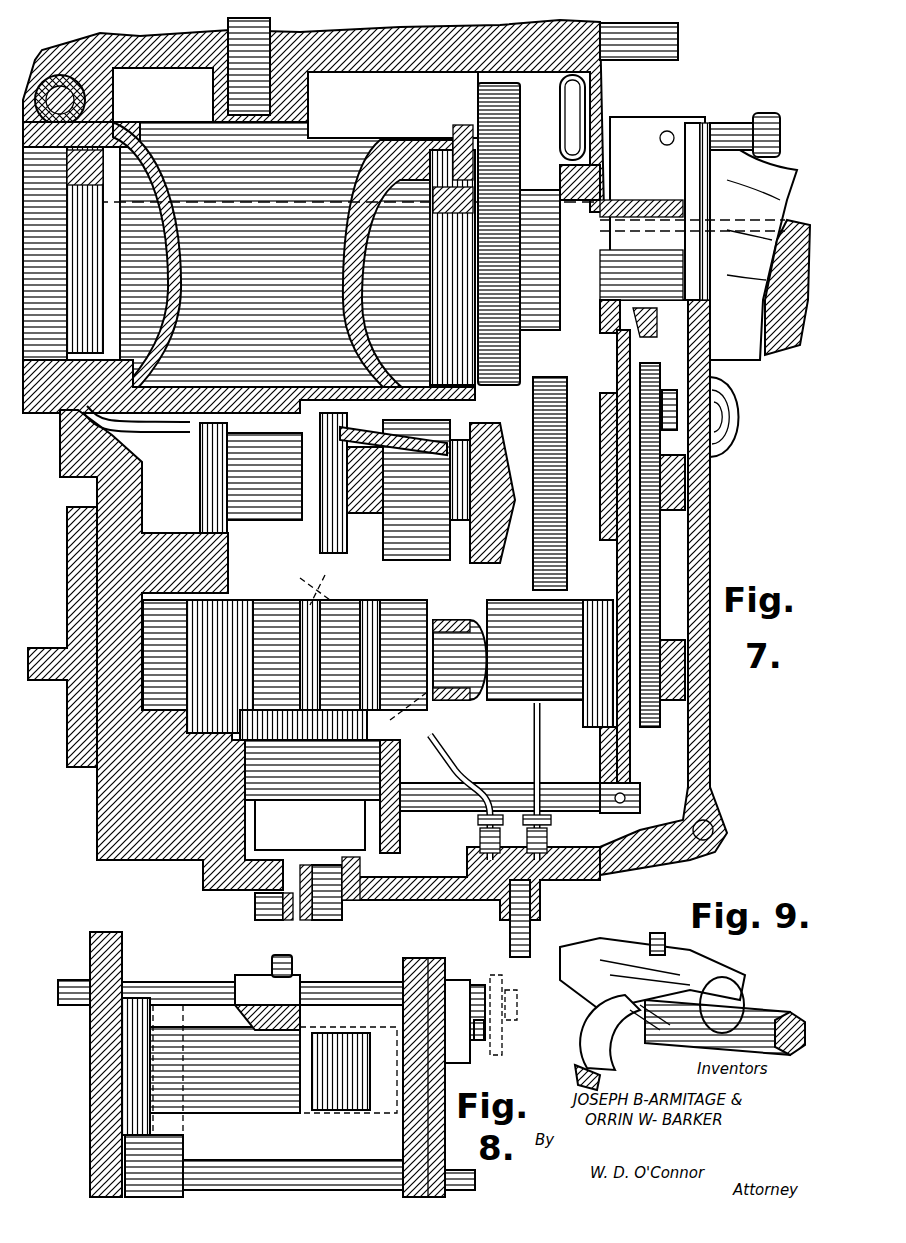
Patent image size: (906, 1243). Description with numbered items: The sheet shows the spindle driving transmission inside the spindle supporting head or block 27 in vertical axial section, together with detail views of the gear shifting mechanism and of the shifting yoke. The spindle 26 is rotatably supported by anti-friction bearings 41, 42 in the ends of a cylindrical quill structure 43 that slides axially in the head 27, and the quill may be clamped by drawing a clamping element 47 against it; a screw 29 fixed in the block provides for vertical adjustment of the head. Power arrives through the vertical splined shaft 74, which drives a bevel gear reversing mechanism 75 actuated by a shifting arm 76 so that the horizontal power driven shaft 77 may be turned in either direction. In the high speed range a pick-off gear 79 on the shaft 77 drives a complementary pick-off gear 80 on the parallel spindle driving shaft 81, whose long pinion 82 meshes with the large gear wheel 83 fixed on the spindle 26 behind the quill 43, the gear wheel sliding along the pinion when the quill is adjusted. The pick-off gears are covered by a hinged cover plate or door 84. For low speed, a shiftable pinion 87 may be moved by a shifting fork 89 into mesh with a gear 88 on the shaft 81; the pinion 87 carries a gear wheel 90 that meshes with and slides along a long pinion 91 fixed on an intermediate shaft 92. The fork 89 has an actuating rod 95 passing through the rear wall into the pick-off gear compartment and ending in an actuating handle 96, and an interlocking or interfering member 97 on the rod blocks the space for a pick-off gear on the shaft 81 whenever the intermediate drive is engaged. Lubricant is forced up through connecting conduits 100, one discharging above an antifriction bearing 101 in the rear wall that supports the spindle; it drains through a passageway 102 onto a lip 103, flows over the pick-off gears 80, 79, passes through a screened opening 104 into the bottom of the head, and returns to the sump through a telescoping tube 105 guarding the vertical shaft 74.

In FIG. 7, the spindle 26 is at (58, 231).
In FIG. 7, the spindle supporting head or block 27 is at (175, 45).
In FIG. 7, the screw 29 is at (213, 92).
In FIG. 7, the anti-friction bearing 41 is at (118, 126).
In FIG. 7, the anti-friction bearing 42 is at (455, 165).
In FIG. 7, the cylindrical quill structure 43 is at (340, 150).
In FIG. 7, the clamping element 47 is at (56, 92).
In FIG. 7, the splined shaft 74 is at (258, 907).
In FIG. 7, the bevel gear reversing mechanism 75 is at (330, 620).
In FIG. 7, the shifting arm 76 is at (426, 786).
In FIG. 7, the horizontal power driven shaft 77 is at (455, 640).
In FIG. 7, the pick-off gear 79 is at (655, 722).
In FIG. 7, the pick-off gear 80 is at (665, 580).
In FIG. 7, the spindle driving shaft 81 is at (718, 483).
In FIG. 7, the long pinion 82 is at (330, 428).
In FIG. 7, the large gear wheel 83 is at (478, 97).
In FIG. 7, the hinged cover plate or door 84 is at (708, 743).
In FIG. 7, the shiftable pinion 87 is at (525, 562).
In FIG. 8, the shiftable pinion 87 is at (347, 1112).
In FIG. 7, the gear 88 is at (548, 377).
In FIG. 7, the shifting fork 89 is at (440, 456).
In FIG. 8, the shifting fork 89 is at (320, 985).
In FIG. 9, the shifting fork 89 is at (613, 1038).
In FIG. 7, the gear wheel 90 is at (245, 530).
In FIG. 8, the gear wheel 90 is at (122, 1075).
In FIG. 8, the long pinion 91 is at (176, 1160).
In FIG. 8, the intermediate shaft 92 is at (252, 1165).
In FIG. 7, the actuating rod 95 is at (227, 428).
In FIG. 8, the actuating rod 95 is at (170, 981).
In FIG. 9, the actuating rod 95 is at (765, 1010).
In FIG. 7, the actuating handle 96 is at (665, 388).
In FIG. 8, the actuating handle 96 is at (500, 975).
In FIG. 8, the interlocking or interfering member 97 is at (482, 1050).
In FIG. 7, the connecting conduits 100 is at (520, 750).
In FIG. 7, the antifriction bearing 101 is at (606, 181).
In FIG. 7, the passageway 102 is at (642, 328).
In FIG. 7, the lip 103 is at (735, 360).
In FIG. 7, the screened opening 104 is at (660, 870).
In FIG. 7, the telescoping tube 105 is at (344, 913).